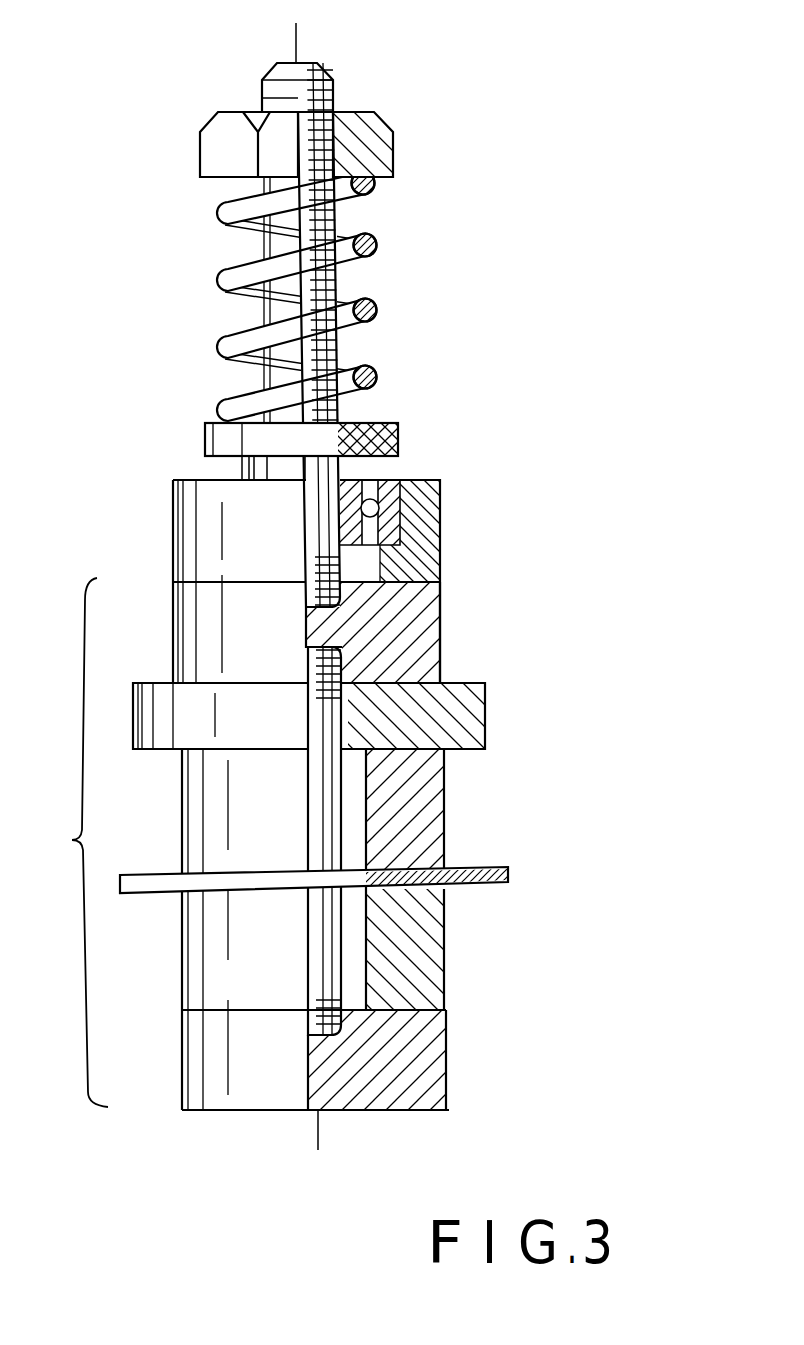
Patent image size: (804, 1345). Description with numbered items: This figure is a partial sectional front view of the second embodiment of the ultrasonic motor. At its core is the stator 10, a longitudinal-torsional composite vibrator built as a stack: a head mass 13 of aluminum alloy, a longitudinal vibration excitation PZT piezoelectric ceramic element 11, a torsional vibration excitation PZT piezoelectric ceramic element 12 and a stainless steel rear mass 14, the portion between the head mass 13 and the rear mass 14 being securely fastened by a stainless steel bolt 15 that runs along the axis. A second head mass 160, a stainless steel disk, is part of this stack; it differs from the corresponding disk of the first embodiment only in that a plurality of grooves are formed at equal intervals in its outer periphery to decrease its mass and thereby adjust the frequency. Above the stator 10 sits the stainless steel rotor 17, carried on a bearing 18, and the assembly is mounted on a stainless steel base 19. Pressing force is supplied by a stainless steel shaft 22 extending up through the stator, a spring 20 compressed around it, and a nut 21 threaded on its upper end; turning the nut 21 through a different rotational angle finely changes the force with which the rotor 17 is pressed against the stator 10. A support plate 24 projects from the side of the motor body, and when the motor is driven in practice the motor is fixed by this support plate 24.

The stator 10 is at (73, 842).
The longitudinal vibration excitation PZT piezoelectric ceramic element 11 is at (415, 790).
The torsional vibration excitation PZT piezoelectric ceramic element 12 is at (425, 972).
The head mass 13 is at (402, 617).
The rear mass 14 is at (423, 1062).
The bolt 15 is at (333, 930).
The rotor 17 is at (423, 553).
The bearing 18 is at (390, 497).
The base 19 is at (385, 437).
The spring 20 is at (378, 248).
The nut 21 is at (372, 147).
The shaft 22 is at (320, 70).
The support plate 24 is at (472, 870).
The head mass 160 is at (442, 702).